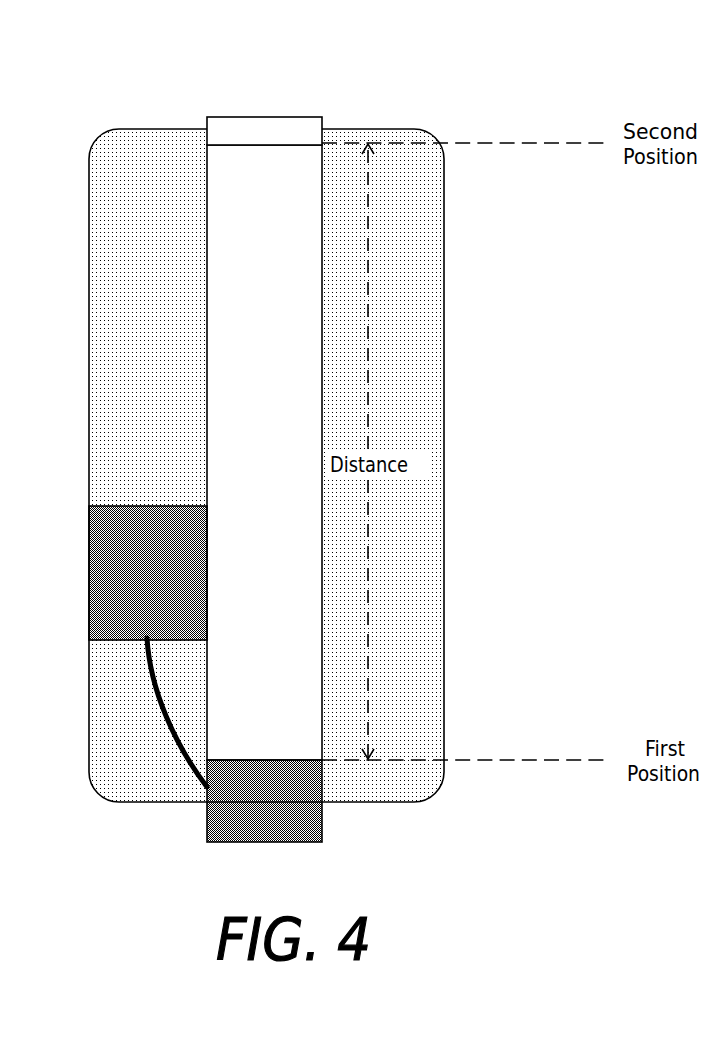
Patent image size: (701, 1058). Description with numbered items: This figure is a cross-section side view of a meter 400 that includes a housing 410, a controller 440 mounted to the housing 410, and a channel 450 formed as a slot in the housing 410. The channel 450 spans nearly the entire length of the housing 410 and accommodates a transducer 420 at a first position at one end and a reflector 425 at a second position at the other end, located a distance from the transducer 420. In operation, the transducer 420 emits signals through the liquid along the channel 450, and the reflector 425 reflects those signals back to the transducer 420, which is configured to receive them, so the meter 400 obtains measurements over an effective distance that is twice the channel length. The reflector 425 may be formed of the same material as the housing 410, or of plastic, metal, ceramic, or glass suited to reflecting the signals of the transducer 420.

The meter 400 is at (630, 62).
The housing 410 is at (444, 240).
The transducer 420 is at (263, 843).
The reflector 425 is at (296, 117).
The controller 440 is at (118, 506).
The channel 450 is at (207, 407).